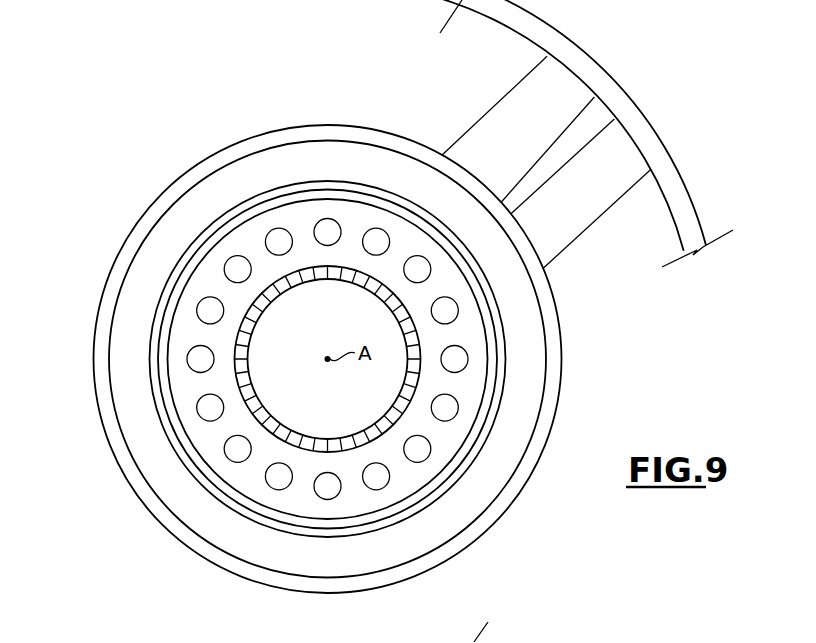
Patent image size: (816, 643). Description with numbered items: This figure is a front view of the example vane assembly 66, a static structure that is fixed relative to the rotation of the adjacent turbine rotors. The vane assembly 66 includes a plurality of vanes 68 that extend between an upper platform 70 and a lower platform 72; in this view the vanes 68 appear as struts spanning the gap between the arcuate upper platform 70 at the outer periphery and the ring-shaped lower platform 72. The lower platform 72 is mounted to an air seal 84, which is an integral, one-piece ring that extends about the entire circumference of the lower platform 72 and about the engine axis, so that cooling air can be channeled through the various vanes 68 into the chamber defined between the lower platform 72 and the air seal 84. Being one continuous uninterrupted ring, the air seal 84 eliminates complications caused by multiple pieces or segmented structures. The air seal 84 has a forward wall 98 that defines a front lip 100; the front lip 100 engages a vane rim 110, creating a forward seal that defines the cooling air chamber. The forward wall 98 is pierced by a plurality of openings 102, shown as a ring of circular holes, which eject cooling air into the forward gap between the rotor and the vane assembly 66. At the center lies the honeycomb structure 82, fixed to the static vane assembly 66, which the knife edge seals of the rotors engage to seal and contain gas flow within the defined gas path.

The vane assembly 66 is at (690, 330).
The vane 68 is at (578, 213).
The upper platform 70 is at (677, 190).
The lower platform 72 is at (557, 377).
The honeycomb structure 82 is at (237, 383).
The air seal 84 is at (207, 443).
The forward wall 98 is at (250, 237).
The front lip 100 is at (170, 330).
The openings 102 is at (424, 247).
The vane rim 110 is at (167, 302).